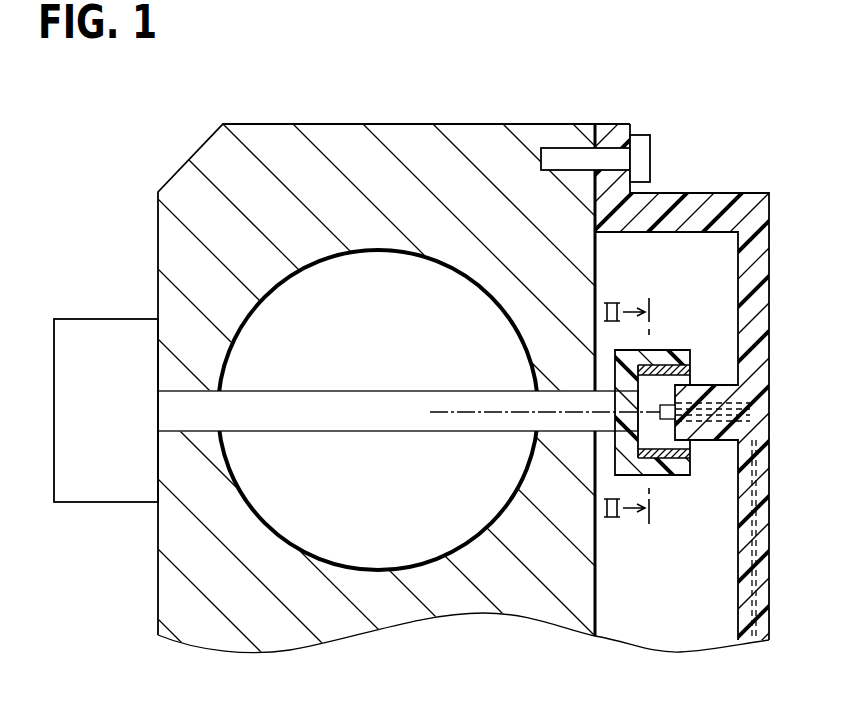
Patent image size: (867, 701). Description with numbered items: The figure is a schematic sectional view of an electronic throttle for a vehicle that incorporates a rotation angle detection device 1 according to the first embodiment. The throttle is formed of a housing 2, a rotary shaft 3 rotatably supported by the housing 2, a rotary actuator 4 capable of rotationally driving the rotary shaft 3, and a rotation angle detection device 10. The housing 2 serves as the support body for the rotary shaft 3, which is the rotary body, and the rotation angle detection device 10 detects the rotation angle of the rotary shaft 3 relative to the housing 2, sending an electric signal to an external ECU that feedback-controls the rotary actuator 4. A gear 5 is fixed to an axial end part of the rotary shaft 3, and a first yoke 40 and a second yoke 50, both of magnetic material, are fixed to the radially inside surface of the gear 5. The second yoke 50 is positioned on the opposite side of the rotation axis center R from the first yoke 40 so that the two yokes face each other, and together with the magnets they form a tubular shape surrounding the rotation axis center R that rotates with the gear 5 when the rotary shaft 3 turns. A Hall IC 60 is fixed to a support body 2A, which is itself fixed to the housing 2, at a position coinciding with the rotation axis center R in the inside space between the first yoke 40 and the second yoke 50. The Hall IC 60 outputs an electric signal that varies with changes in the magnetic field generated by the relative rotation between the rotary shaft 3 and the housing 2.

The rotation angle detection device 1 is at (191, 125).
The housing 2 is at (343, 133).
The support body 2A is at (705, 203).
The rotary shaft 3 is at (385, 417).
The rotary actuator 4 is at (101, 490).
The gear 5 is at (675, 476).
The rotation angle detection device 10 is at (696, 479).
The first yoke 40 is at (690, 371).
The second yoke 50 is at (690, 456).
The Hall IC 60 is at (665, 403).
The rotation axis center R is at (444, 414).